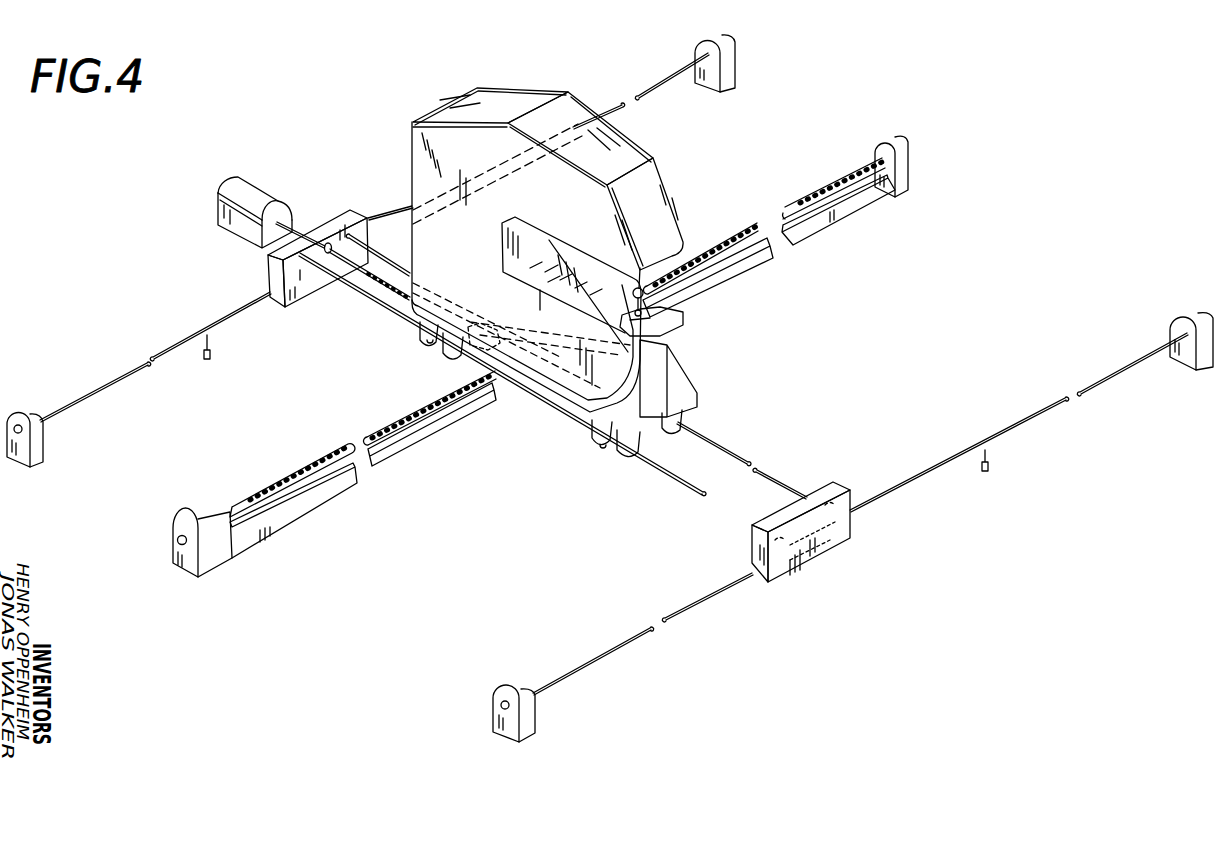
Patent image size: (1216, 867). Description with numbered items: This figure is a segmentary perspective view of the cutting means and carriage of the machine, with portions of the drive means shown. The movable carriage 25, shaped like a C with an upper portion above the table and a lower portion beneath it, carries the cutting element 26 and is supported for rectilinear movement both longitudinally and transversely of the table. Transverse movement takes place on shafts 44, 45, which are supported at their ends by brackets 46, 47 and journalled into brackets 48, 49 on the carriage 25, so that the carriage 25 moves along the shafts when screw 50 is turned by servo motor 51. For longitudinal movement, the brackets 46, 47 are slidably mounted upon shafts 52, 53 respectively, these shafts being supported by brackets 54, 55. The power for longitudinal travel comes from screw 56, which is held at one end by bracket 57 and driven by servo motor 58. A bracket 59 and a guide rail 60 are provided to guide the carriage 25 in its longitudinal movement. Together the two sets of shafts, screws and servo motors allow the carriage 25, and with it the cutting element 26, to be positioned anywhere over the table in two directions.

The carriage 25 is at (554, 83).
The cutting element 26 is at (655, 308).
The shaft 44 is at (728, 443).
The shaft 45 is at (667, 477).
The bracket 46 is at (823, 548).
The bracket 47 is at (342, 205).
The bracket 48 is at (400, 350).
The bracket 49 is at (590, 442).
The screw 50 is at (383, 288).
The servo motor 51 is at (238, 188).
The shaft 52 is at (1012, 423).
The shaft 53 is at (665, 75).
The bracket 54 is at (1187, 370).
The bracket 55 is at (733, 68).
The screw 56 is at (820, 187).
The bracket 57 is at (912, 179).
The servo motor 58 is at (200, 510).
The bracket 59 is at (513, 397).
The guide rail 60 is at (447, 458).